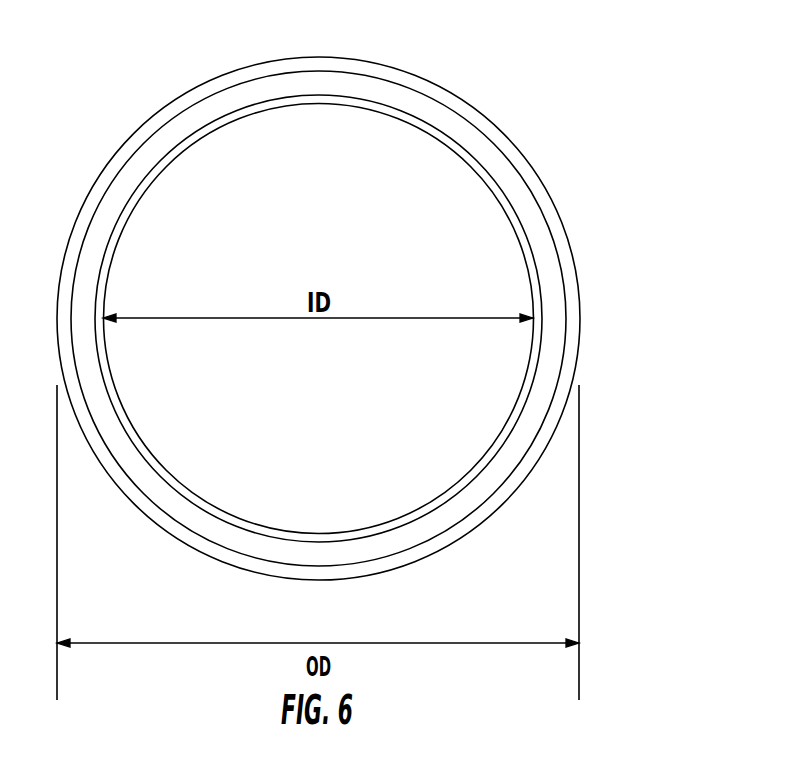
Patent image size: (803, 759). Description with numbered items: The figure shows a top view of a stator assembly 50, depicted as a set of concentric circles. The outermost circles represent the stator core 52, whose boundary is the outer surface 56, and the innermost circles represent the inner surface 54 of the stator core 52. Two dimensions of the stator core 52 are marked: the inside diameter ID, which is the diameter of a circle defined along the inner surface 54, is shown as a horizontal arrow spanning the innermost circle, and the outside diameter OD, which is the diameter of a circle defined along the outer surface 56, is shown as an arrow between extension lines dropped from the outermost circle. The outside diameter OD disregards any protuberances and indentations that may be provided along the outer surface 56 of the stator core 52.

The stator assembly 50 is at (351, 310).
The stator core 52 is at (580, 318).
The inner surface 54 is at (453, 152).
The outer surface 56 is at (351, 310).